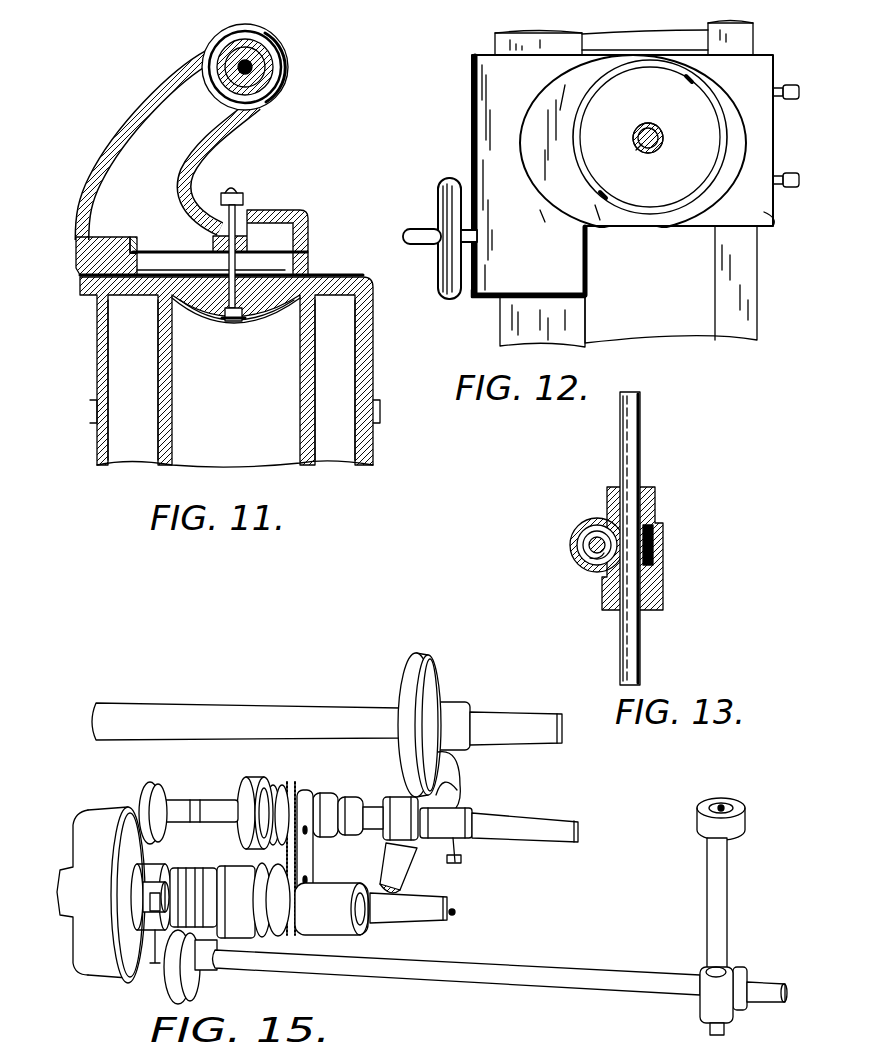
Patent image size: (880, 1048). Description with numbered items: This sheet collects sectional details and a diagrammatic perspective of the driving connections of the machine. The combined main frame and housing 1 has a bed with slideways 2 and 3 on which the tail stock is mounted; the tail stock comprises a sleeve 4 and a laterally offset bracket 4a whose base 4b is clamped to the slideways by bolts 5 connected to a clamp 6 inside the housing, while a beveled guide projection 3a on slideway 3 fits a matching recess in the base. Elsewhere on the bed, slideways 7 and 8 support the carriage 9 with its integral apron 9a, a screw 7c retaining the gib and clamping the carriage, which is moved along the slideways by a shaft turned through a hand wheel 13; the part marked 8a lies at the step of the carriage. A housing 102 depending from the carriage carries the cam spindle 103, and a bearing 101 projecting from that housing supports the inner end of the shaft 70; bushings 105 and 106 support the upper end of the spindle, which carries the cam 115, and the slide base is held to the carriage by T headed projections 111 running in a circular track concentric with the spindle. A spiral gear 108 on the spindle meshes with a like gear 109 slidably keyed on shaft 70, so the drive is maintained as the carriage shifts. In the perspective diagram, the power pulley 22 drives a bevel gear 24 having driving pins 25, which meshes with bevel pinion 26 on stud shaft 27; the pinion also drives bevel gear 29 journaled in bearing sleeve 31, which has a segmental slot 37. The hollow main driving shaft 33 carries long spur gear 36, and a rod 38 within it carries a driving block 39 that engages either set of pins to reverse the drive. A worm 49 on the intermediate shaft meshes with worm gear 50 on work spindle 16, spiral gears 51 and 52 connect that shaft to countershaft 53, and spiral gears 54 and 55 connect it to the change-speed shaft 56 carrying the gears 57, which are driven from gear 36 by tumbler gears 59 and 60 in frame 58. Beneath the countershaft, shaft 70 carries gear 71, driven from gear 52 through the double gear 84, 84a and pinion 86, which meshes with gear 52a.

In FIG. 11, the main frame and housing 1 is at (170, 392).
In FIG. 11, the slideway 2 is at (314, 275).
In FIG. 11, the slideway 3 is at (78, 274).
In FIG. 11, the guide projection 3a is at (107, 250).
In FIG. 11, the sleeve 4 is at (282, 66).
In FIG. 11, the bracket 4a is at (138, 108).
In FIG. 11, the base 4b is at (270, 221).
In FIG. 11, the bolts 5 is at (228, 238).
In FIG. 11, the clamp 6 is at (272, 322).
In FIG. 12, the slideway 7 is at (722, 288).
In FIG. 12, the screw 7c is at (793, 100).
In FIG. 12, the slideway 8 is at (580, 324).
In FIG. 12, the corner 8a is at (780, 218).
In FIG. 12, the carriage 9 is at (622, 176).
In FIG. 12, the apron 9a is at (478, 300).
In FIG. 12, the hand wheel 13 is at (440, 268).
In FIG. 15, the work spindle 16 is at (298, 700).
In FIG. 15, the pulley 22 is at (77, 861).
In FIG. 15, the bevel gear 24 is at (143, 895).
In FIG. 15, the driving pins 25 is at (123, 850).
In FIG. 15, the bevel pinion 26 is at (152, 916).
In FIG. 15, the stud shaft 27 is at (154, 966).
In FIG. 15, the bevel gear 29 is at (204, 897).
In FIG. 15, the bearing sleeve 31 is at (228, 920).
In FIG. 15, the main driving shaft 33 is at (145, 903).
In FIG. 15, the spur gear 36 is at (332, 909).
In FIG. 15, the segmental slot 37 is at (272, 846).
In FIG. 15, the rod 38 is at (457, 910).
In FIG. 15, the driving block 39 is at (183, 862).
In FIG. 15, the worm 49 is at (445, 795).
In FIG. 15, the worm gear 50 is at (437, 692).
In FIG. 15, the spiral gear 51 is at (458, 765).
In FIG. 15, the spiral gear 52 is at (462, 858).
In FIG. 15, the gear 52a is at (143, 800).
In FIG. 15, the countershaft 53 is at (528, 826).
In FIG. 15, the spiral gear 54 is at (440, 865).
In FIG. 15, the spiral gear 55 is at (400, 818).
In FIG. 15, the change-speed shaft 56 is at (452, 820).
In FIG. 15, the gears 57 is at (310, 800).
In FIG. 15, the tumbler frame 58 is at (271, 900).
In FIG. 15, the gear 59 is at (315, 876).
In FIG. 15, the gear 60 is at (298, 853).
In FIG. 13, the shaft 70 is at (642, 462).
In FIG. 15, the shaft 70 is at (412, 966).
In FIG. 15, the gear 71 is at (200, 988).
In FIG. 15, the double gear 84 is at (201, 806).
In FIG. 15, the double gear 84a is at (180, 862).
In FIG. 15, the pinion 86 is at (245, 790).
In FIG. 13, the bearing 101 is at (664, 582).
In FIG. 13, the housing 102 is at (590, 522).
In FIG. 12, the cam spindle 103 is at (668, 124).
In FIG. 13, the cam spindle 103 is at (590, 545).
In FIG. 15, the cam spindle 103 is at (727, 868).
In FIG. 12, the bushing 105 is at (640, 150).
In FIG. 12, the bushing 106 is at (662, 146).
In FIG. 13, the spiral gear 108 is at (582, 562).
In FIG. 15, the spiral gear 108 is at (708, 1000).
In FIG. 13, the spiral gear 109 is at (665, 530).
In FIG. 15, the spiral gear 109 is at (745, 968).
In FIG. 12, the T headed projections 111 is at (688, 79).
In FIG. 15, the cam 115 is at (740, 812).